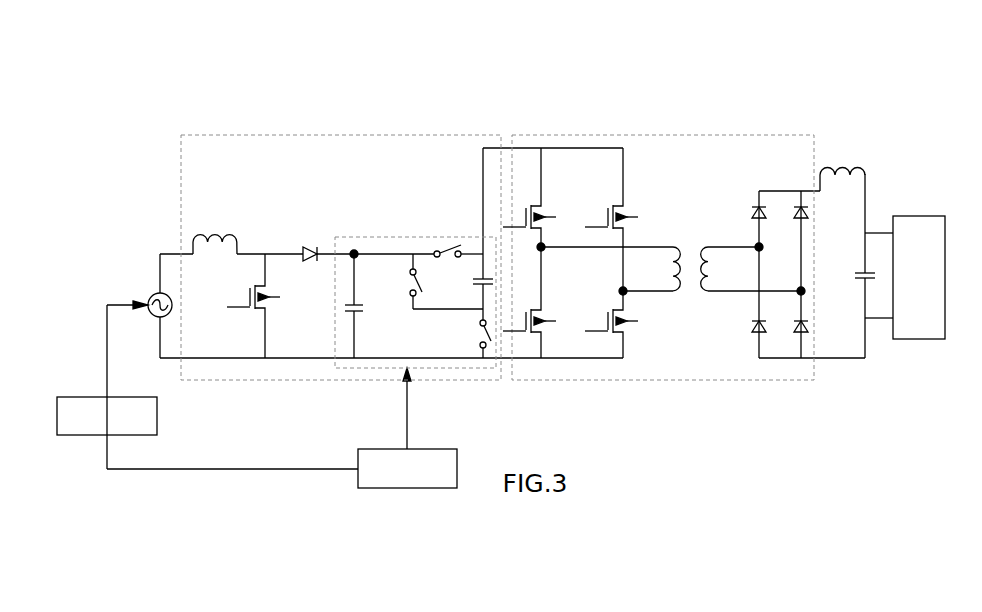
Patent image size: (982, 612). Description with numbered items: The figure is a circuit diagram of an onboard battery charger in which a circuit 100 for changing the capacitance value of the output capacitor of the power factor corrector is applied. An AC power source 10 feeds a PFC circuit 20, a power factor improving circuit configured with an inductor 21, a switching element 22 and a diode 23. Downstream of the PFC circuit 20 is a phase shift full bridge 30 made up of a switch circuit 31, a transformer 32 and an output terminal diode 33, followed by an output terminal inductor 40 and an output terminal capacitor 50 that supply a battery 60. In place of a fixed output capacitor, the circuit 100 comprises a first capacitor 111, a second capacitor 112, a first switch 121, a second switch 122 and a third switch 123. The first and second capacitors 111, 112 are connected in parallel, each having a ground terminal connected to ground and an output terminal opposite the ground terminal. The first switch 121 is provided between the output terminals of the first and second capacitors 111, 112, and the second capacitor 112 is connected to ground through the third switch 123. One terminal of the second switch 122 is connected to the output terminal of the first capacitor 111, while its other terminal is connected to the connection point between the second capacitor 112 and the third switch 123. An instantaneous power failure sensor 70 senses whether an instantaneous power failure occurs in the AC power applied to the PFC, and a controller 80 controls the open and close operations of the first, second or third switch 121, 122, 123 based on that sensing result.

The AC power source 10 is at (150, 294).
The PFC circuit 20 is at (244, 134).
The inductor 21 is at (216, 234).
The switching element 22 is at (249, 309).
The diode 23 is at (310, 246).
The phase shift full bridge 30 is at (636, 134).
The switch circuit 31 is at (548, 212).
The transformer 32 is at (688, 244).
The output terminal diode 33 is at (752, 205).
The output terminal inductor 40 is at (846, 172).
The output terminal capacitor 50 is at (858, 282).
The battery 60 is at (920, 216).
The instantaneous power failure sensor 70 is at (157, 413).
The controller 80 is at (457, 457).
The circuit 100 is at (343, 368).
The first capacitor 111 is at (338, 312).
The second capacitor 112 is at (495, 288).
The first switch 121 is at (450, 246).
The second switch 122 is at (412, 284).
The third switch 123 is at (478, 343).